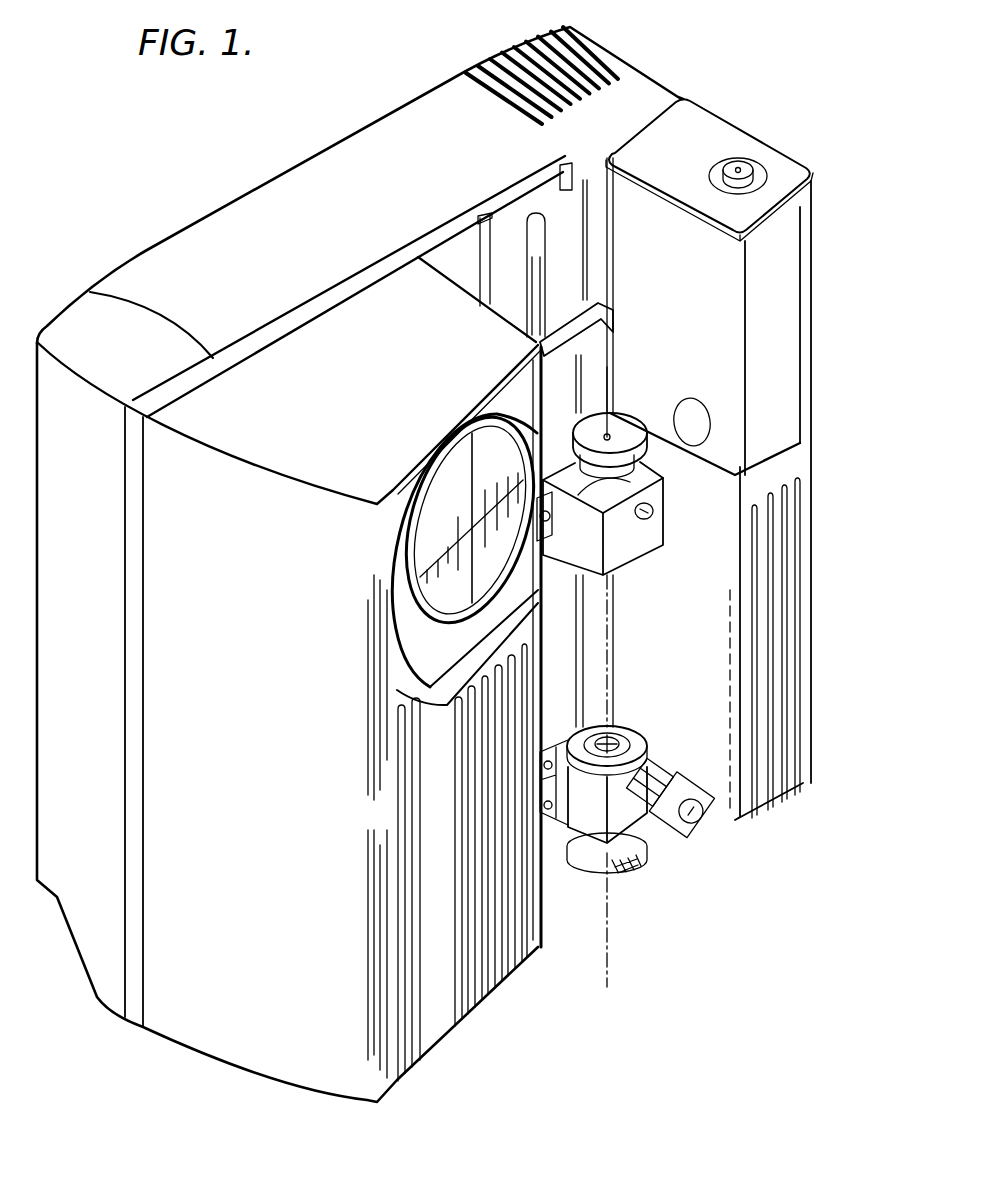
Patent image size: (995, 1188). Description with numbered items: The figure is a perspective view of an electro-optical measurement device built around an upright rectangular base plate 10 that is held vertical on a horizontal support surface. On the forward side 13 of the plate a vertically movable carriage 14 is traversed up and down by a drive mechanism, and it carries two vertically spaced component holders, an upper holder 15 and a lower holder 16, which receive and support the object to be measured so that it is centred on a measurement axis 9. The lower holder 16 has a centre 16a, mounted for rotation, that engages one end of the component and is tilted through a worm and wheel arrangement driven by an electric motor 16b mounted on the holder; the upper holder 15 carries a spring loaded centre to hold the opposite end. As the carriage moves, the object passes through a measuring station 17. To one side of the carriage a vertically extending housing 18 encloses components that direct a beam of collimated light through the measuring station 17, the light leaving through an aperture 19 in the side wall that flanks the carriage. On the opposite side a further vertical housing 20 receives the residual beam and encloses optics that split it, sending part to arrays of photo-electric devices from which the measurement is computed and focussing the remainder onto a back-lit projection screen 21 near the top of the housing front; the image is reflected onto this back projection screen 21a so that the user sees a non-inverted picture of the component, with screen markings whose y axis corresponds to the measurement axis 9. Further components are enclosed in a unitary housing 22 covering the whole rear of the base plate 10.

The measurement axis 9 is at (607, 963).
The base plate 10 is at (90, 292).
The forward side 13 is at (457, 253).
The carriage 14 is at (597, 358).
The upper holder 15 is at (633, 537).
The lower holder 16 is at (643, 833).
The centre 16a is at (627, 733).
The electric motor 16b is at (688, 836).
The measuring station 17 is at (668, 492).
The housing 18 is at (697, 637).
The aperture 19 is at (703, 427).
The housing 20 is at (310, 1073).
The projection screen 21 is at (440, 527).
The back projection screen 21a is at (483, 480).
The unitary housing 22 is at (213, 220).